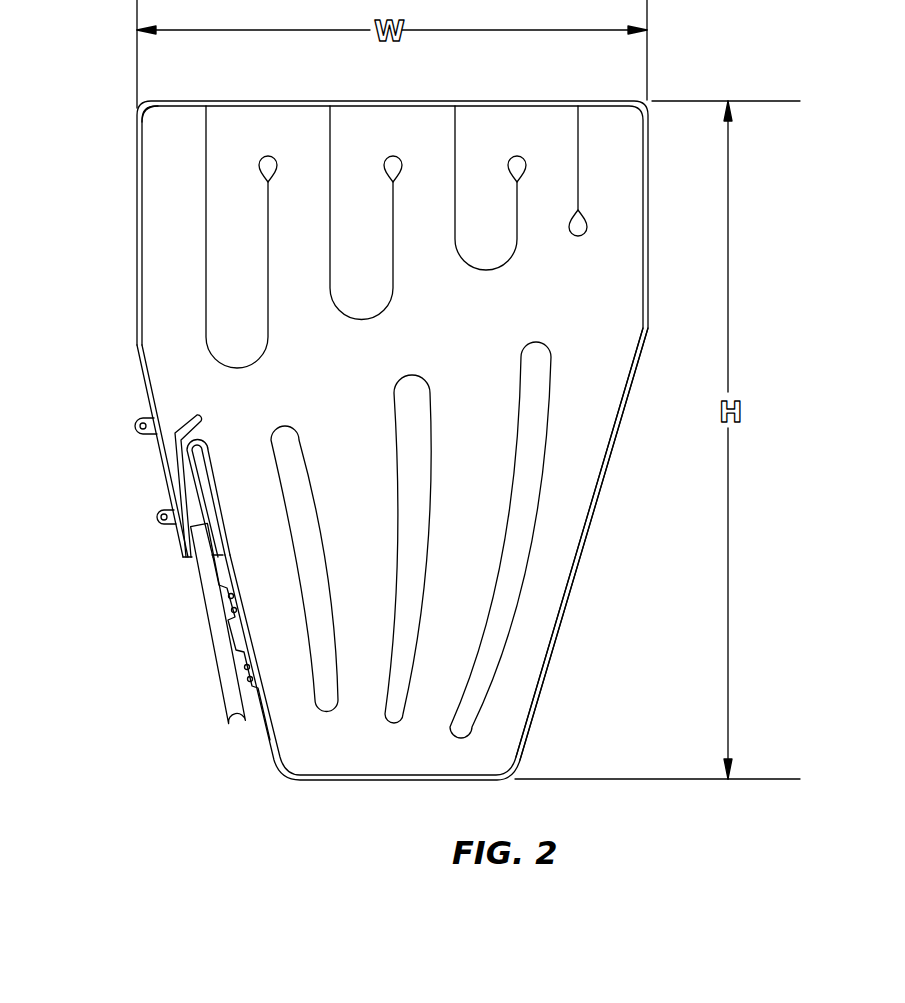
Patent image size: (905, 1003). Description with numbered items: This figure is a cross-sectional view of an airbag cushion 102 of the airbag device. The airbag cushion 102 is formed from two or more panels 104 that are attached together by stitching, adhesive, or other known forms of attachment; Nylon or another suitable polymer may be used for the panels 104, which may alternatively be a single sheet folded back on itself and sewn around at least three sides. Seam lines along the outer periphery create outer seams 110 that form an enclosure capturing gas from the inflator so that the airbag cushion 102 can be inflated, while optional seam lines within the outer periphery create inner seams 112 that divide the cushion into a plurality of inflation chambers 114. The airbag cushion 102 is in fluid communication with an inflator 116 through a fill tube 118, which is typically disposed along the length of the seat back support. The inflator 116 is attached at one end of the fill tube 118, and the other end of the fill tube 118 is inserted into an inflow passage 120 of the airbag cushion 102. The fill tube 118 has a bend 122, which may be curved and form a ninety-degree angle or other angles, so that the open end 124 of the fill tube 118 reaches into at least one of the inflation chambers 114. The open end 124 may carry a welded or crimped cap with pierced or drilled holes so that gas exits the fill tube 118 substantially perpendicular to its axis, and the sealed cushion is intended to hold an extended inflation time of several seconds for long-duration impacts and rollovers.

The airbag cushion 102 is at (477, 122).
The panel 104 is at (175, 230).
The outer seam 110 is at (182, 110).
The inner seam 112 is at (514, 250).
The inflation chamber 114 is at (352, 282).
The inflator 116 is at (207, 600).
The fill tube 118 is at (182, 498).
The inflow passage 120 is at (170, 469).
The bend 122 is at (173, 427).
The open end 124 is at (200, 410).